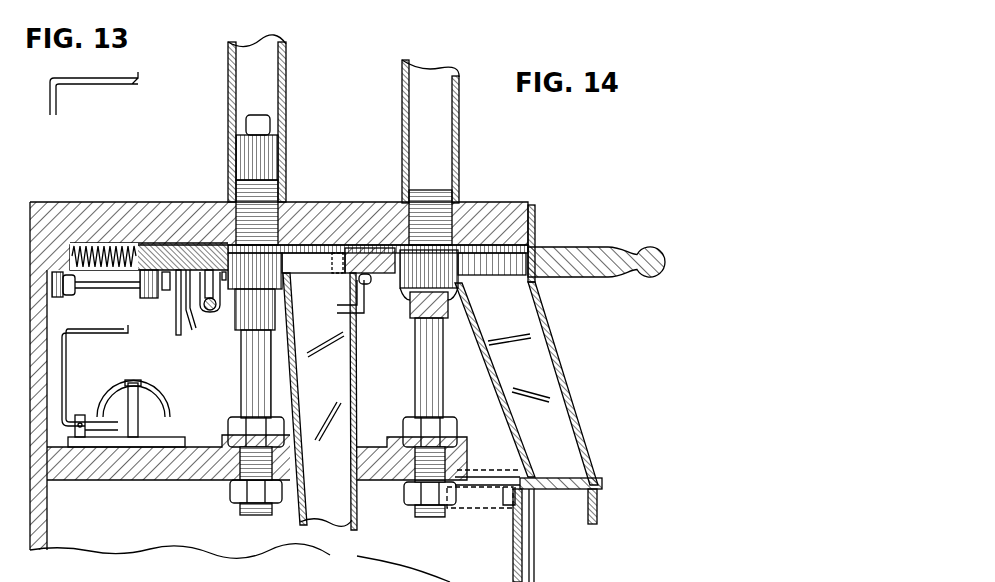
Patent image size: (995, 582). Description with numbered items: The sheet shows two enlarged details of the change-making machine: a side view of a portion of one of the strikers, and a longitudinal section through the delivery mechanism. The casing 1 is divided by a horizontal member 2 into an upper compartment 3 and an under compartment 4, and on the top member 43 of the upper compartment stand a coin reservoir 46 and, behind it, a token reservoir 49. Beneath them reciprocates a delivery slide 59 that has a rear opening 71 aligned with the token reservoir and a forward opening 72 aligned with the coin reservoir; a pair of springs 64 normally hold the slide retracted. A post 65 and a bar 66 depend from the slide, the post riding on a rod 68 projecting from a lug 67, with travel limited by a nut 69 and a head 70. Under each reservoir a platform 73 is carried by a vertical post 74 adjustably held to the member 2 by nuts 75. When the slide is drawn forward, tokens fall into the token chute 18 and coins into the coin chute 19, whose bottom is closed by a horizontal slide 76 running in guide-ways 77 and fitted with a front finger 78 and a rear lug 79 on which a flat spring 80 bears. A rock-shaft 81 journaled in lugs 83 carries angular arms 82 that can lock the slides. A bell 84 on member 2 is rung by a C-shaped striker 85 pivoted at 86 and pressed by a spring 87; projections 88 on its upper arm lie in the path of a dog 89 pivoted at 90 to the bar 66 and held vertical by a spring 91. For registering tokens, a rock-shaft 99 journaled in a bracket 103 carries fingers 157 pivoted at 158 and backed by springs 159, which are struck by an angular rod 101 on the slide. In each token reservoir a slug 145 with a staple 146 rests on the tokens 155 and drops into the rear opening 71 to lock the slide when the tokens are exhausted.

In FIG. 14, the casing 1 is at (30, 394).
In FIG. 14, the horizontal member 2 is at (214, 481).
In FIG. 14, the upper compartment 3 is at (132, 415).
In FIG. 14, the under compartment 4 is at (248, 563).
In FIG. 14, the token chute 18 is at (320, 401).
In FIG. 14, the coin chute 19 is at (560, 385).
In FIG. 14, the top member 43 is at (368, 245).
In FIG. 14, the coin reservoir 46 is at (461, 136).
In FIG. 14, the token reservoir 49 is at (286, 58).
In FIG. 14, the delivery slide 59 is at (572, 257).
In FIG. 14, the spring 64 is at (104, 244).
In FIG. 14, the post 65 is at (150, 300).
In FIG. 14, the bar 66 is at (177, 300).
In FIG. 14, the lug 67 is at (56, 297).
In FIG. 14, the rod 68 is at (107, 289).
In FIG. 14, the nut 69 is at (70, 296).
In FIG. 14, the head 70 is at (166, 292).
In FIG. 14, the rear opening 71 is at (310, 245).
In FIG. 14, the forward opening 72 is at (496, 237).
In FIG. 14, the platform 73 is at (240, 292).
In FIG. 14, the vertical post 74 is at (252, 380).
In FIG. 14, the nut 75 is at (232, 425).
In FIG. 14, the horizontal slide 76 is at (565, 489).
In FIG. 14, the guide-way 77 is at (492, 487).
In FIG. 14, the finger 78 is at (598, 516).
In FIG. 14, the lug 79 is at (514, 500).
In FIG. 14, the flat spring 80 is at (505, 497).
In FIG. 14, the rock-shaft 81 is at (365, 290).
In FIG. 14, the angular arm 82 is at (337, 309).
In FIG. 14, the lug 83 is at (371, 290).
In FIG. 14, the bell 84 is at (150, 412).
In FIG. 13, the striker 85 is at (56, 92).
In FIG. 14, the striker 85 is at (66, 373).
In FIG. 14, the pivot 86 is at (80, 415).
In FIG. 14, the spring 87 is at (105, 432).
In FIG. 13, the projection 88 is at (138, 76).
In FIG. 14, the projection 88 is at (128, 327).
In FIG. 14, the dog 89 is at (195, 330).
In FIG. 14, the pivot 90 is at (186, 312).
In FIG. 14, the spring 91 is at (205, 294).
In FIG. 14, the rock-shaft 99 is at (212, 312).
In FIG. 14, the angular rod 101 is at (262, 270).
In FIG. 14, the bracket 103 is at (222, 242).
In FIG. 14, the slug 145 is at (245, 146).
In FIG. 14, the staple 146 is at (272, 118).
In FIG. 14, the token 155 is at (282, 165).
In FIG. 14, the finger 157 is at (213, 240).
In FIG. 14, the pivot 158 is at (202, 290).
In FIG. 14, the spring 159 is at (186, 242).